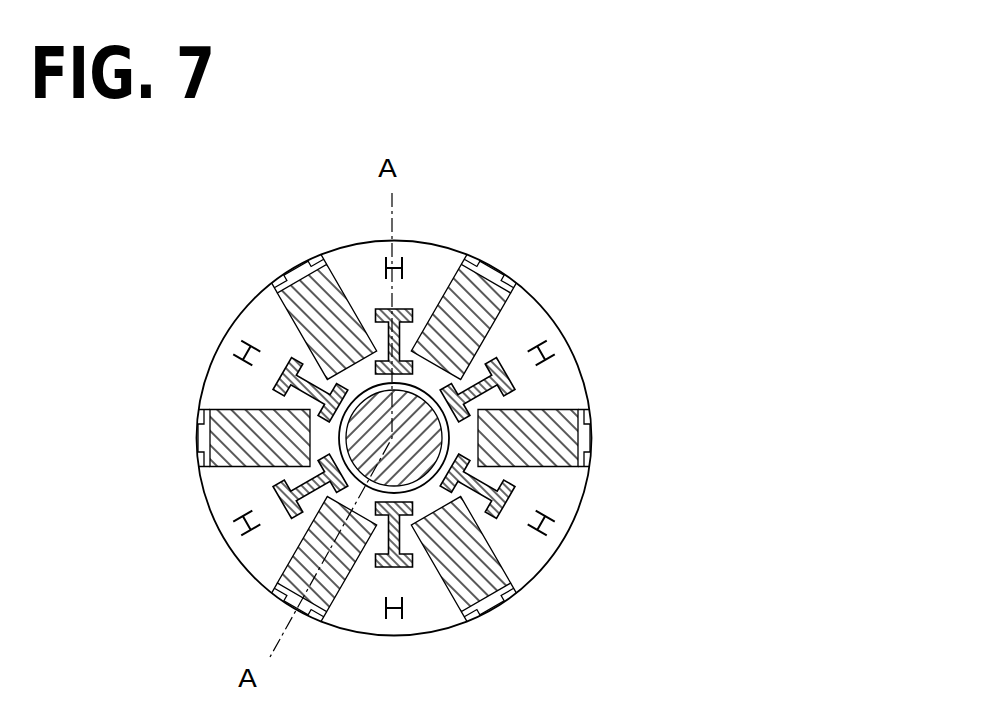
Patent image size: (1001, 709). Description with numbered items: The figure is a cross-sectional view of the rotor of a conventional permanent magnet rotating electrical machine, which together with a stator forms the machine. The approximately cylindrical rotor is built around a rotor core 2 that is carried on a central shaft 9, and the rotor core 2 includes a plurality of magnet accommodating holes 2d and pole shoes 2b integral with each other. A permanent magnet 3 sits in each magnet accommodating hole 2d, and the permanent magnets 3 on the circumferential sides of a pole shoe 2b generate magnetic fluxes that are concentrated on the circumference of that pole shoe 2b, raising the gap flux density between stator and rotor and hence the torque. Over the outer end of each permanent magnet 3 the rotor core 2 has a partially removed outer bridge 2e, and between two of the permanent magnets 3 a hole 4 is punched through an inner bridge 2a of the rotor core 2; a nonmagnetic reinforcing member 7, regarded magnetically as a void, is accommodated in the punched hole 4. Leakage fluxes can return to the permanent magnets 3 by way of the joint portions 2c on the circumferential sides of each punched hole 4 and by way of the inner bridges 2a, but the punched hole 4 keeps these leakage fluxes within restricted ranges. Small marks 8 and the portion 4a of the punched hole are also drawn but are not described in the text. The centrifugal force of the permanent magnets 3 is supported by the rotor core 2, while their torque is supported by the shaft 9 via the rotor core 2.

The rotor core 2 is at (250, 306).
The inner bridge 2a is at (462, 433).
The pole shoe 2b is at (438, 258).
The joint portion 2c is at (468, 500).
The magnet accommodating hole 2d is at (578, 467).
The outer bridge 2e is at (297, 262).
The permanent magnet 3 is at (583, 438).
The hole 4 is at (480, 368).
The Punched hole widened portion 4a is at (285, 500).
The reinforcing member 7 is at (400, 570).
The Hole mark 8 is at (232, 366).
The shaft 9 is at (360, 437).